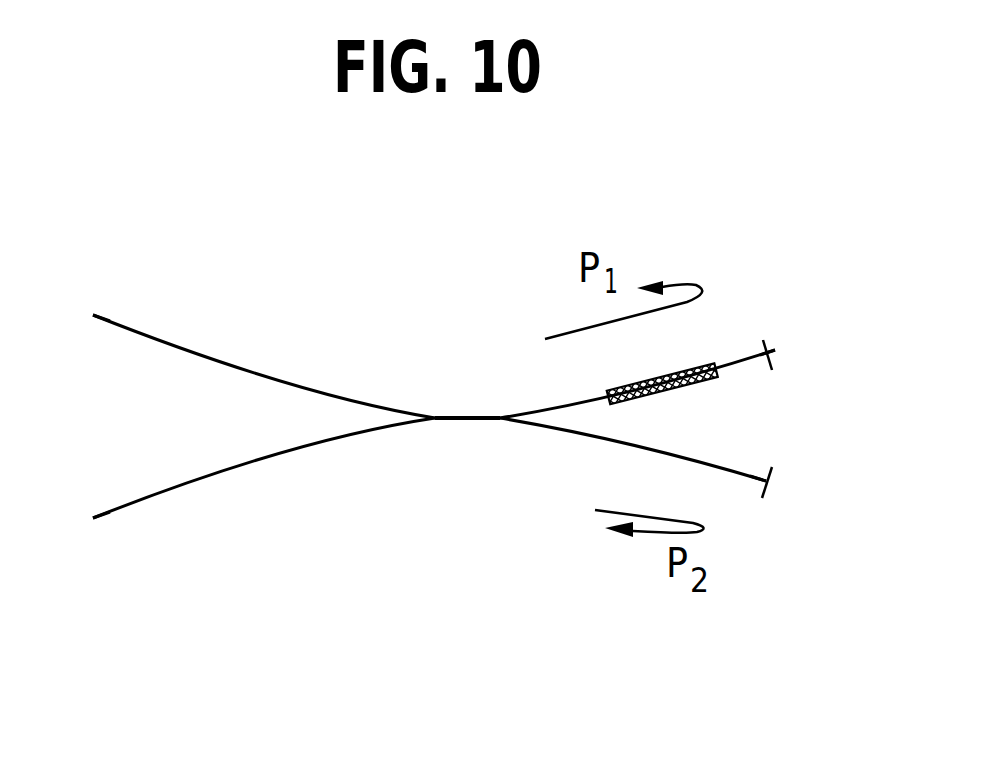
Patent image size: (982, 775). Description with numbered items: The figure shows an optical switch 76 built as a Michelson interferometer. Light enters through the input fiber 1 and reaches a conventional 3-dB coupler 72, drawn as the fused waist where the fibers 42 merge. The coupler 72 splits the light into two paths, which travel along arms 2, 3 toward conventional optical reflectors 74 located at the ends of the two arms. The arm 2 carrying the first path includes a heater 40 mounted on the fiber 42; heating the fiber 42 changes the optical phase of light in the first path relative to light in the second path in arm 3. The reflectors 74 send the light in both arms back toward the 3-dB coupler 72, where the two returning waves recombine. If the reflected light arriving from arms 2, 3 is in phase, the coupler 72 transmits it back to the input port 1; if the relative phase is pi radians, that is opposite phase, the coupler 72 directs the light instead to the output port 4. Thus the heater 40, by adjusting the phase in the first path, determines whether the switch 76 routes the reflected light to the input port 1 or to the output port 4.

The input fiber 1 is at (87, 526).
The arm 2 is at (761, 327).
The arm 3 is at (760, 513).
The output port 4 is at (83, 308).
The heater 40 is at (682, 368).
The fiber 42 is at (310, 388).
The 3-dB coupler 72 is at (466, 420).
The reflector 74 is at (775, 348).
The optical switch 76 is at (368, 543).